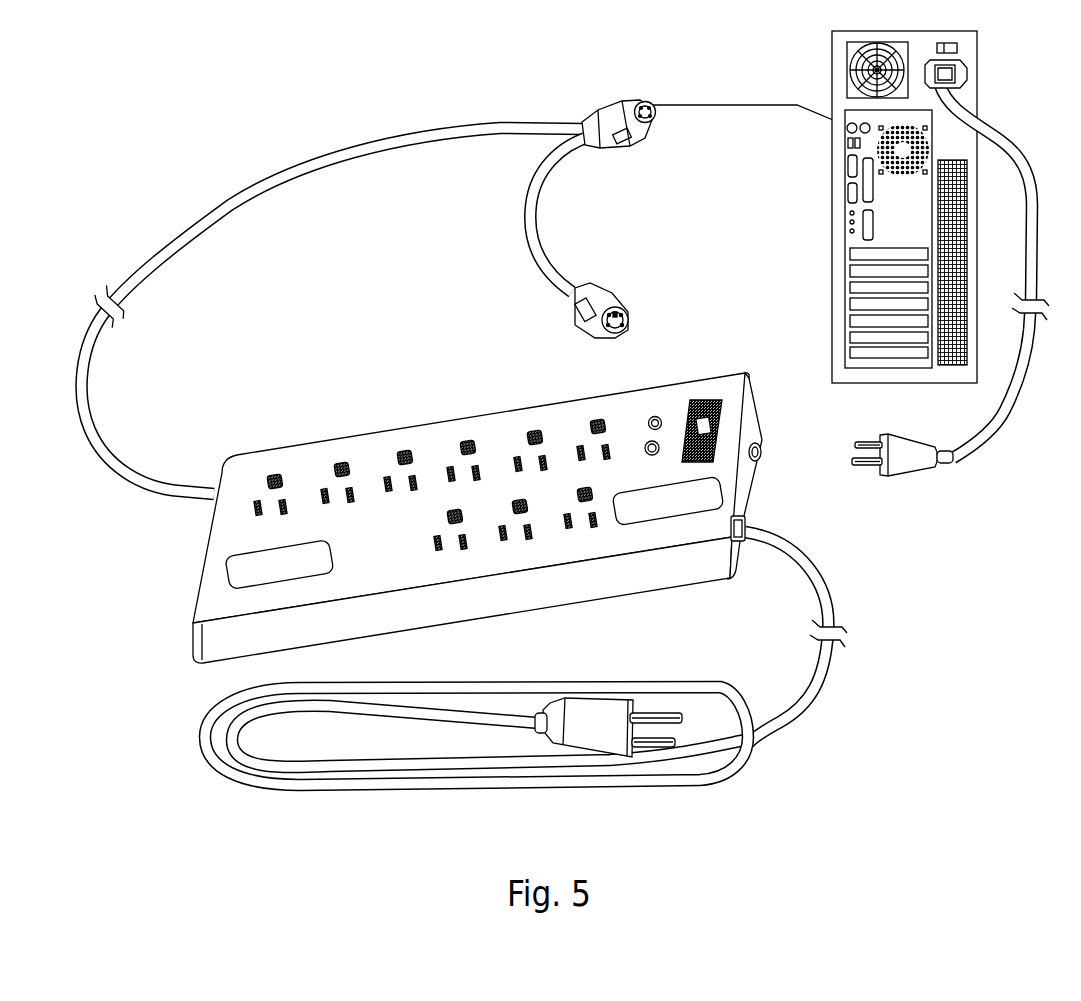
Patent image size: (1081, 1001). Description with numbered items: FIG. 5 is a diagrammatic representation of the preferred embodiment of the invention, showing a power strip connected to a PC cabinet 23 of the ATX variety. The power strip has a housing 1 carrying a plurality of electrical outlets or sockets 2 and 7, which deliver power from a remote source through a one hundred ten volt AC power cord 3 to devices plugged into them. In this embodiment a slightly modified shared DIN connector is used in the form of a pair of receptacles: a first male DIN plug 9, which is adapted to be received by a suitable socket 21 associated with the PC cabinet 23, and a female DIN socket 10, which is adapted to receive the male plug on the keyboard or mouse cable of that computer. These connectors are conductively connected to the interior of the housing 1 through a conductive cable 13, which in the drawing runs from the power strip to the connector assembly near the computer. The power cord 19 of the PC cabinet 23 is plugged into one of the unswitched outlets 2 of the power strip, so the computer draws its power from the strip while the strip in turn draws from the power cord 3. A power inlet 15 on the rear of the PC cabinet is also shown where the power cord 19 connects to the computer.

The housing 1 is at (205, 541).
The electrical outlets 2 is at (562, 630).
The 110V AC power cord 3 is at (597, 722).
The electrical outlets 7 is at (600, 412).
The PS/2 male connector mouse/keyboard plug 9 is at (647, 130).
The PS/2 female connector mouse/keyboard connector 10 is at (630, 318).
The conductive cable 13 is at (162, 264).
The computer power socket 15 is at (968, 73).
The power cord 19 is at (935, 467).
The socket 21 is at (847, 127).
The PC cabinet 23 is at (832, 237).